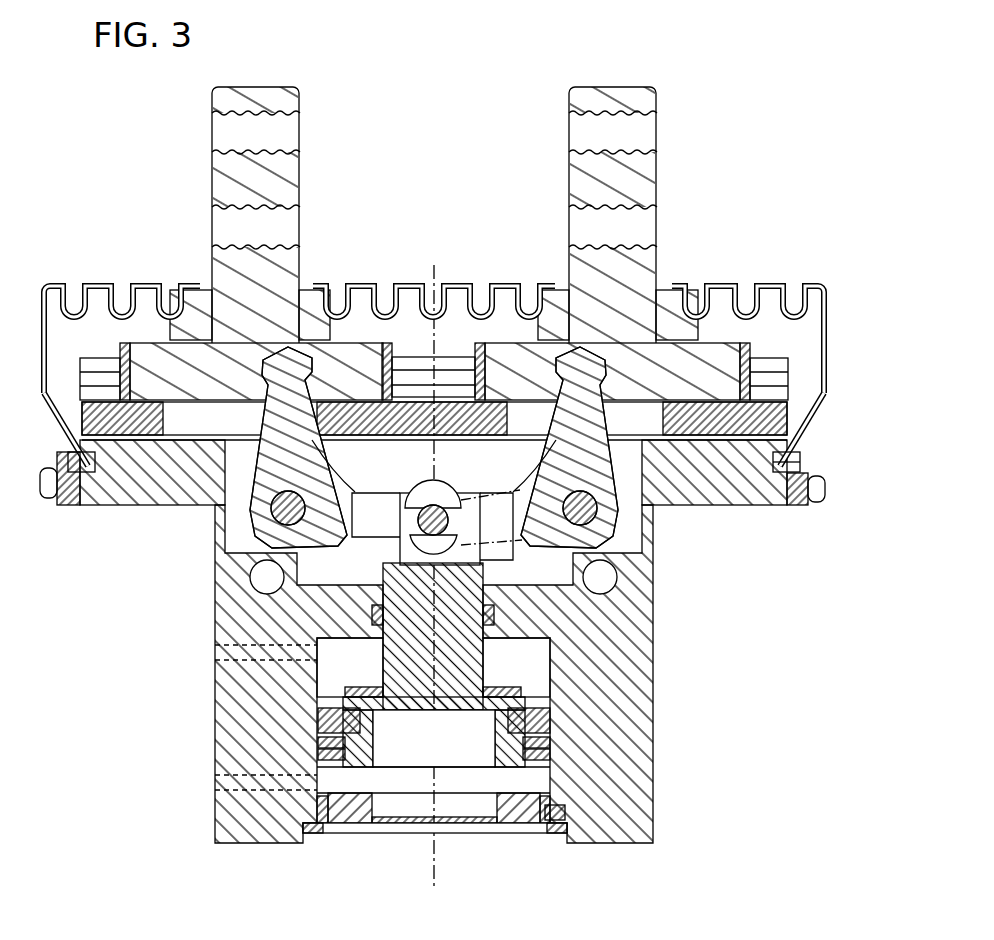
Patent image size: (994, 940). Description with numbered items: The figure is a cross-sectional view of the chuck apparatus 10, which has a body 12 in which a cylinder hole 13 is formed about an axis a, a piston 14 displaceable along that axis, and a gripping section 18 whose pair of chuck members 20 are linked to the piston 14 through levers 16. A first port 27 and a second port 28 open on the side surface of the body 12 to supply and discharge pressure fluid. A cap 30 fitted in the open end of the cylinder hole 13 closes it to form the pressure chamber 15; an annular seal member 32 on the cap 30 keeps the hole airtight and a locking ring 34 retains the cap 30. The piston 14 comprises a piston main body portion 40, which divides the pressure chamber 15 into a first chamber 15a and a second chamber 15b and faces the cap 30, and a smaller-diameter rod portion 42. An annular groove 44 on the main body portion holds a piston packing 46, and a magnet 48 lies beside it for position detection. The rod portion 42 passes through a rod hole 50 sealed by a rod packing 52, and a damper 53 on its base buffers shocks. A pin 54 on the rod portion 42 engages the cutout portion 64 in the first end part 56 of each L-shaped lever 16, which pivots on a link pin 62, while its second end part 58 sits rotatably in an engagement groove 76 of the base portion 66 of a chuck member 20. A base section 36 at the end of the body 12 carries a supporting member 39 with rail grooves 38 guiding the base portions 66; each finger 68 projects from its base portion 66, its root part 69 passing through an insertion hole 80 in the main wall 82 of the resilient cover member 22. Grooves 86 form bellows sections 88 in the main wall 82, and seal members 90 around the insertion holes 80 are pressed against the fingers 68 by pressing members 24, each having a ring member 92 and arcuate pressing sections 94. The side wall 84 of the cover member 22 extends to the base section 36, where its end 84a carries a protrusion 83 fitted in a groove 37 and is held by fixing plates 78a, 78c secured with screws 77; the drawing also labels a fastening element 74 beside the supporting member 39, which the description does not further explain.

The chuck apparatus 10 is at (136, 98).
The body 12 is at (656, 600).
The cylinder hole 13 is at (550, 650).
The piston 14 is at (556, 735).
The pressure chamber 15 is at (760, 688).
The first chamber 15a is at (540, 680).
The second chamber 15b is at (535, 780).
The lever 16 is at (262, 512).
The gripping section 18 is at (672, 118).
The chuck member 20 is at (212, 172).
The cover member 22 is at (770, 278).
The pressing member 24 is at (150, 315).
The first port 27 is at (218, 650).
The second port 28 is at (218, 788).
The cap 30 is at (355, 832).
The annular seal member 32 is at (556, 810).
The locking ring 34 is at (313, 834).
The base section 36 is at (745, 490).
The groove 37 is at (800, 462).
The rail groove 38 is at (421, 372).
The supporting member 39 is at (82, 428).
The piston main body portion 40 is at (352, 800).
The rod portion 42 is at (392, 673).
The annular groove 44 is at (332, 754).
The piston packing 46 is at (330, 742).
The magnet 48 is at (335, 720).
The rod hole 50 is at (382, 582).
The rod packing 52 is at (372, 615).
The damper 53 is at (500, 688).
The pin 54 is at (417, 521).
The first end part 56 is at (446, 490).
The second end part 58 is at (336, 437).
The link pin 62 is at (275, 518).
The cutout portion 64 is at (470, 546).
The base portion 66 is at (340, 380).
The finger 68 is at (290, 186).
The root part 69 is at (232, 330).
The bolt 74 is at (122, 350).
The engagement groove 76 is at (262, 428).
The screw 77 is at (45, 498).
The fixing plate 78a is at (68, 506).
The fixing plate 78c is at (800, 506).
The insertion hole 80 is at (272, 320).
The main wall 82 is at (412, 282).
The protrusion 83 is at (85, 472).
The side wall 84 is at (826, 342).
The end of side wall 84a is at (792, 452).
The groove 86 is at (120, 300).
The bellows section 88 is at (88, 277).
The seal member 90 is at (318, 292).
The ring member 92 is at (200, 342).
The pressing section 94 is at (196, 300).
The axis a is at (440, 878).